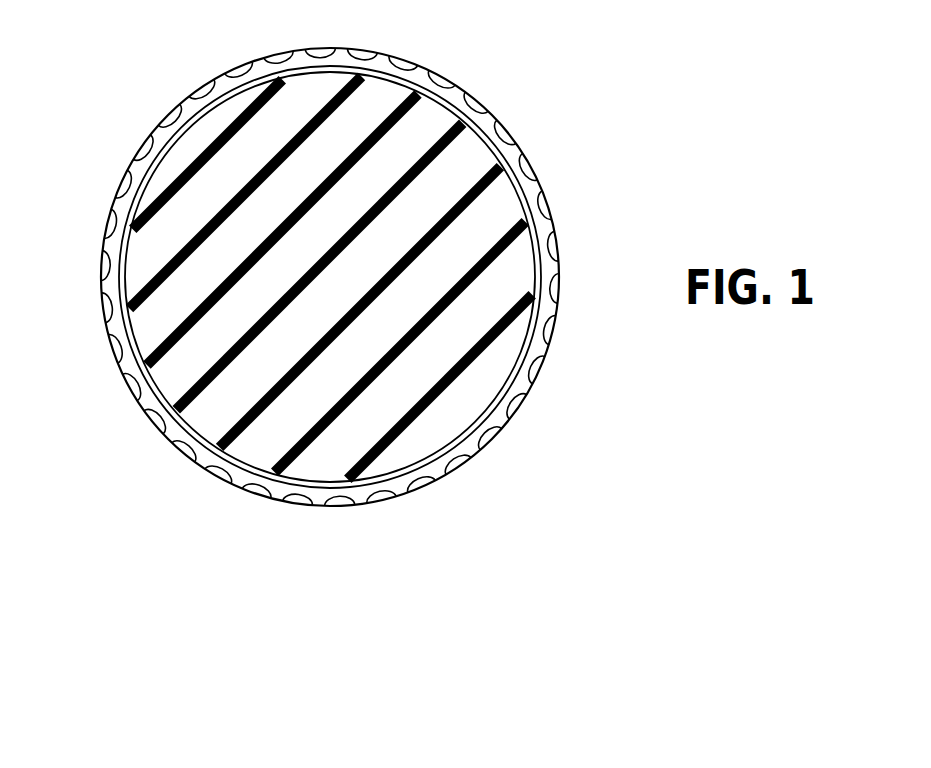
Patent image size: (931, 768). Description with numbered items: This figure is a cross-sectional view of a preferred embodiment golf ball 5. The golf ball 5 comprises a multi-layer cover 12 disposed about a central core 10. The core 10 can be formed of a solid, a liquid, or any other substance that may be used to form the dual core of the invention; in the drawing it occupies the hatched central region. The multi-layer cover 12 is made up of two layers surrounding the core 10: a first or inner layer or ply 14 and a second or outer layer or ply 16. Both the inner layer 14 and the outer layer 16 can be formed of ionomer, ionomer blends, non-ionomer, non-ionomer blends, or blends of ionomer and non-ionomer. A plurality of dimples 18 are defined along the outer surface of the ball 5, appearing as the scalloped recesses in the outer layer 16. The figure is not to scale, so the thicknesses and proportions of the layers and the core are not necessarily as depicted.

The golf ball 5 is at (596, 135).
The core 10 is at (196, 412).
The multi-layer cover 12 is at (206, 466).
The inner layer 14 is at (200, 124).
The outer layer 16 is at (553, 230).
The dimples 18 is at (490, 88).